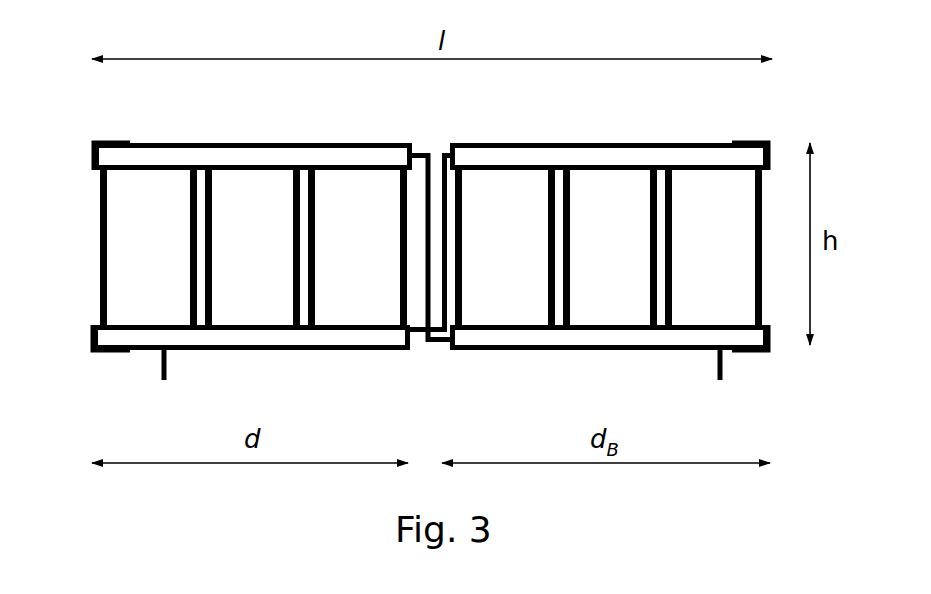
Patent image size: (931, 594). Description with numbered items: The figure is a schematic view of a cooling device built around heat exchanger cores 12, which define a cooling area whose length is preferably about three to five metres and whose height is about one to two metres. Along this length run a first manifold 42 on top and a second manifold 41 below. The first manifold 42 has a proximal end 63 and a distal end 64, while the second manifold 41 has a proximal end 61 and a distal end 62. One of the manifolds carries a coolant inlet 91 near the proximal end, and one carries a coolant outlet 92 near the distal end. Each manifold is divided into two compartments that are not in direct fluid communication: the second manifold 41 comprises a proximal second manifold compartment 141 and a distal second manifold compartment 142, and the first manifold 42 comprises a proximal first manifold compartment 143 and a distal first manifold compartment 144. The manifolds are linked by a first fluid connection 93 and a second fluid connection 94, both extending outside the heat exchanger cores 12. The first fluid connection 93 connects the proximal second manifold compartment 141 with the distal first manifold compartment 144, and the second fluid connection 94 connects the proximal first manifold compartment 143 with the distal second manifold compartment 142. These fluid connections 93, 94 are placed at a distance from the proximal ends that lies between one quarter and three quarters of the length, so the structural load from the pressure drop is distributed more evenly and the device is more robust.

The heat exchanger core 12 is at (128, 258).
The second manifold 41 is at (210, 352).
The first manifold 42 is at (665, 152).
The proximal end 61 is at (89, 343).
The distal end 62 is at (768, 344).
The proximal end 63 is at (93, 146).
The distal end 64 is at (769, 146).
The coolant inlet 91 is at (161, 378).
The coolant outlet 92 is at (718, 380).
The first fluid connection 93 is at (418, 336).
The second fluid connection 94 is at (438, 348).
The proximal second manifold compartment 141 is at (302, 352).
The distal second manifold compartment 142 is at (637, 352).
The proximal first manifold compartment 143 is at (370, 145).
The distal first manifold compartment 144 is at (515, 145).